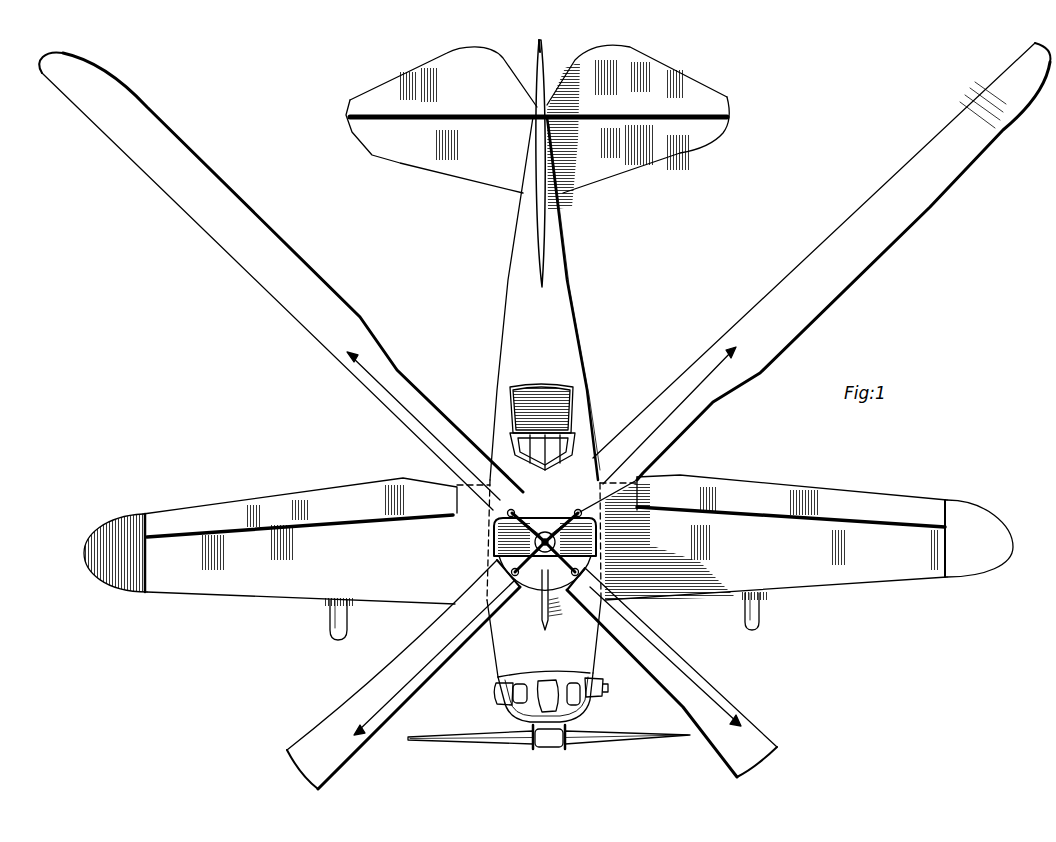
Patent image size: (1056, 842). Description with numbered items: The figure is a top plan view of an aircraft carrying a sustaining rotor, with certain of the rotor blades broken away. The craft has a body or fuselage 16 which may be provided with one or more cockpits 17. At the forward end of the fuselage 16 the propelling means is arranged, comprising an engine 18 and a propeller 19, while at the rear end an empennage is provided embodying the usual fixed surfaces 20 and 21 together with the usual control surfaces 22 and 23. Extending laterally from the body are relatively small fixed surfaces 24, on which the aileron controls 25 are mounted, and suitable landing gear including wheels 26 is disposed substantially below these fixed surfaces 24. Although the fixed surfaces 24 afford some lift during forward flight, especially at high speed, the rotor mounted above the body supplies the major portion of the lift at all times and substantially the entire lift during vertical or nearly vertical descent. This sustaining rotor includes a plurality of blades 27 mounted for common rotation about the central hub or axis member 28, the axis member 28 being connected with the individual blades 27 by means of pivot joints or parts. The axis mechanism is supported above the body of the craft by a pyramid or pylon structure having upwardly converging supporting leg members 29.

The fuselage 16 is at (518, 333).
The cockpit 17 is at (560, 403).
The engine 18 is at (605, 690).
The propeller 19 is at (583, 733).
The fixed surface 20 is at (633, 165).
The fixed surface 21 is at (546, 243).
The control surface 22 is at (380, 92).
The control surface 23 is at (540, 52).
The laterally extended fixed surface 24 is at (275, 583).
The aileron control 25 is at (307, 500).
The wheel 26 is at (340, 633).
The blade 27 is at (200, 205).
The axis member 28 is at (500, 543).
The supporting leg member 29 is at (565, 505).